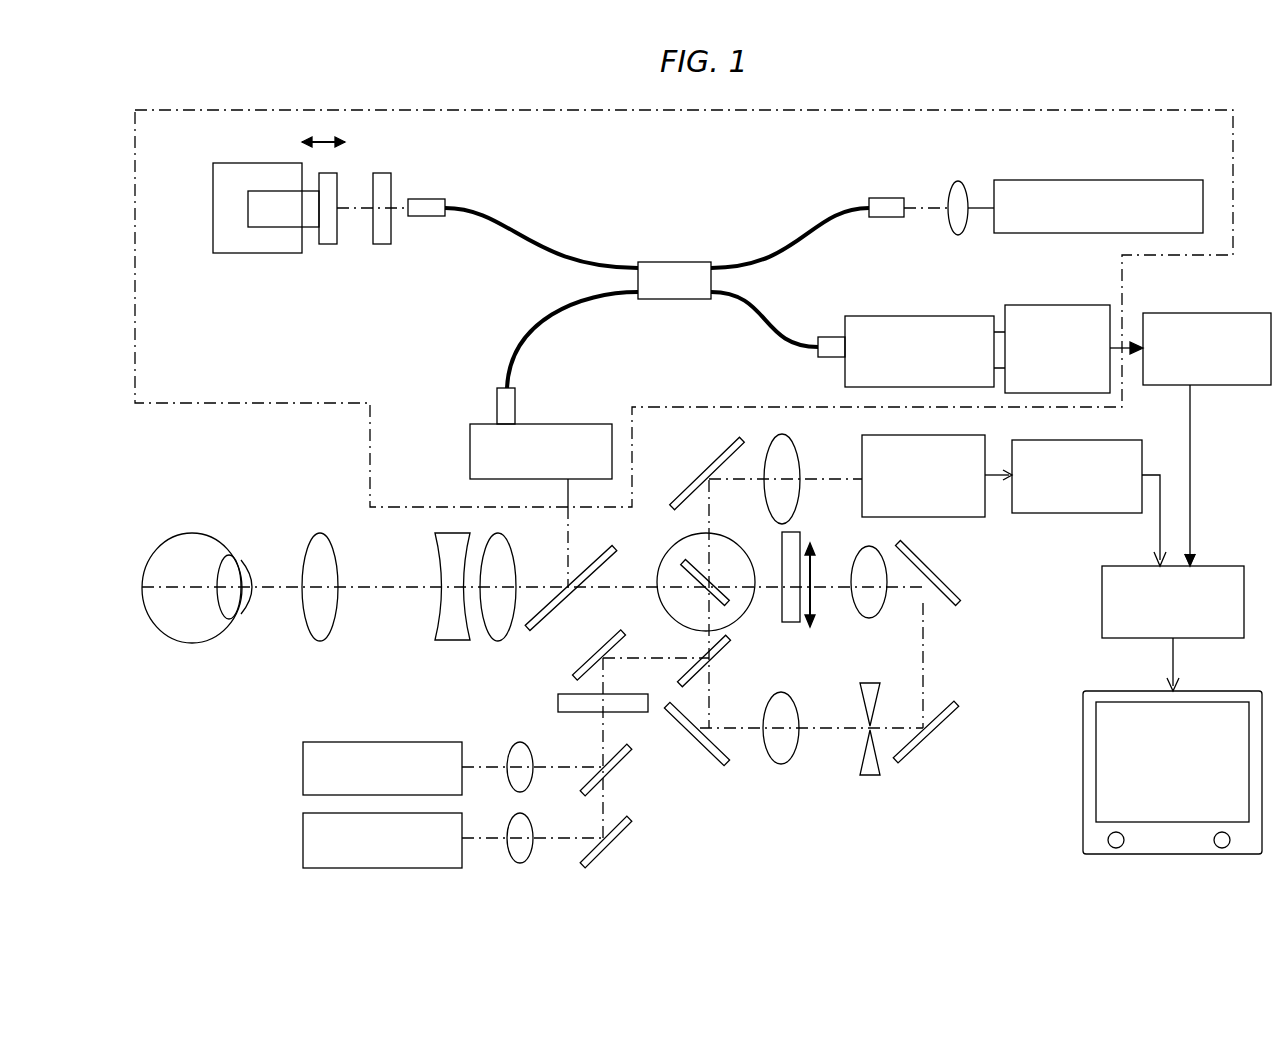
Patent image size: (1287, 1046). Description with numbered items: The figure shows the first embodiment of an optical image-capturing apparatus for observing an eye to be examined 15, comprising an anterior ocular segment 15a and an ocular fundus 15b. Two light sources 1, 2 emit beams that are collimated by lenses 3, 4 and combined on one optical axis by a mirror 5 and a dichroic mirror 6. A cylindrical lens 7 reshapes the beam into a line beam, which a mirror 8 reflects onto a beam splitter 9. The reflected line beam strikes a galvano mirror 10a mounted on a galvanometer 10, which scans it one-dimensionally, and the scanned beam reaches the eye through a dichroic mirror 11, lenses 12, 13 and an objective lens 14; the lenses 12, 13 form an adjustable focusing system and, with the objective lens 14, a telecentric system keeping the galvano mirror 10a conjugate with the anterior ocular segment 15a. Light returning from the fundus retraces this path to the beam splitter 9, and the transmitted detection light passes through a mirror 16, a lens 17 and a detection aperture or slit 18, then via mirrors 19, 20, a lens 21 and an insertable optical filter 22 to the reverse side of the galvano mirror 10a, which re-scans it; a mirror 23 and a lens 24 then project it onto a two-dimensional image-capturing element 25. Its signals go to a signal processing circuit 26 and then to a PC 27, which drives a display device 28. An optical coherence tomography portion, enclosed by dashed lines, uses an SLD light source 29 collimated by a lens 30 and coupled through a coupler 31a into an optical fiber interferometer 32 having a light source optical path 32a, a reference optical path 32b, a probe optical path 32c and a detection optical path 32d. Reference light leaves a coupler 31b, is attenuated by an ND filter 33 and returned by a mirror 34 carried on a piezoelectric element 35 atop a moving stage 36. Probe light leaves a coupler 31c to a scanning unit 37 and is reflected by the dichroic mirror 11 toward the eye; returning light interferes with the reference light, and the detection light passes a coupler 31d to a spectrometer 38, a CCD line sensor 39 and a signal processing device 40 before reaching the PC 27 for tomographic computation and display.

The light source 1 is at (303, 840).
The light source 2 is at (303, 768).
The lens 3 is at (528, 852).
The lens 4 is at (512, 745).
The mirror 5 is at (618, 847).
The dichroic mirror 6 is at (620, 776).
The cylindrical lens 7 is at (558, 704).
The mirror 8 is at (586, 658).
The beam splitter 9 is at (718, 672).
The galvanometer 10 is at (670, 548).
The galvano mirror 10a is at (728, 606).
The dichroic mirror 11 is at (608, 552).
The lens 12 is at (500, 641).
The lens 13 is at (452, 640).
The objective lens 14 is at (322, 641).
The eye to be examined 15 is at (190, 643).
The anterior ocular segment 15a is at (242, 560).
The ocular fundus 15b is at (143, 577).
The mirror 16 is at (722, 768).
The lens 17 is at (781, 765).
The detection aperture (slit) 18 is at (866, 776).
The mirror 19 is at (935, 740).
The mirror 20 is at (940, 566).
The lens 21 is at (856, 565).
The optical filter 22 is at (797, 532).
The mirror 23 is at (715, 456).
The lens 24 is at (797, 456).
The two-dimensional image-capturing element 25 is at (985, 502).
The signal processing circuit 26 is at (1072, 513).
The PC 27 is at (1210, 566).
The display device 28 is at (1083, 730).
The SLD light source 29 is at (1060, 180).
The lens 30 is at (962, 181).
The coupler 31a is at (886, 198).
The coupler 31b is at (428, 199).
The coupler 31c is at (497, 398).
The coupler 31d is at (830, 337).
The optical fiber interferometer 32 is at (645, 262).
The light source optical path 32a is at (784, 232).
The reference optical path 32b is at (542, 228).
The probe optical path 32c is at (550, 318).
The detection optical path 32d is at (775, 334).
The ND filter 33 is at (386, 244).
The mirror 34 is at (330, 244).
The piezoelectric element 35 is at (264, 228).
The moving stage 36 is at (213, 210).
The scanning unit 37 is at (470, 450).
The spectrometer 38 is at (955, 316).
The CCD line sensor 39 is at (1045, 305).
The signal processing device 40 is at (1175, 313).